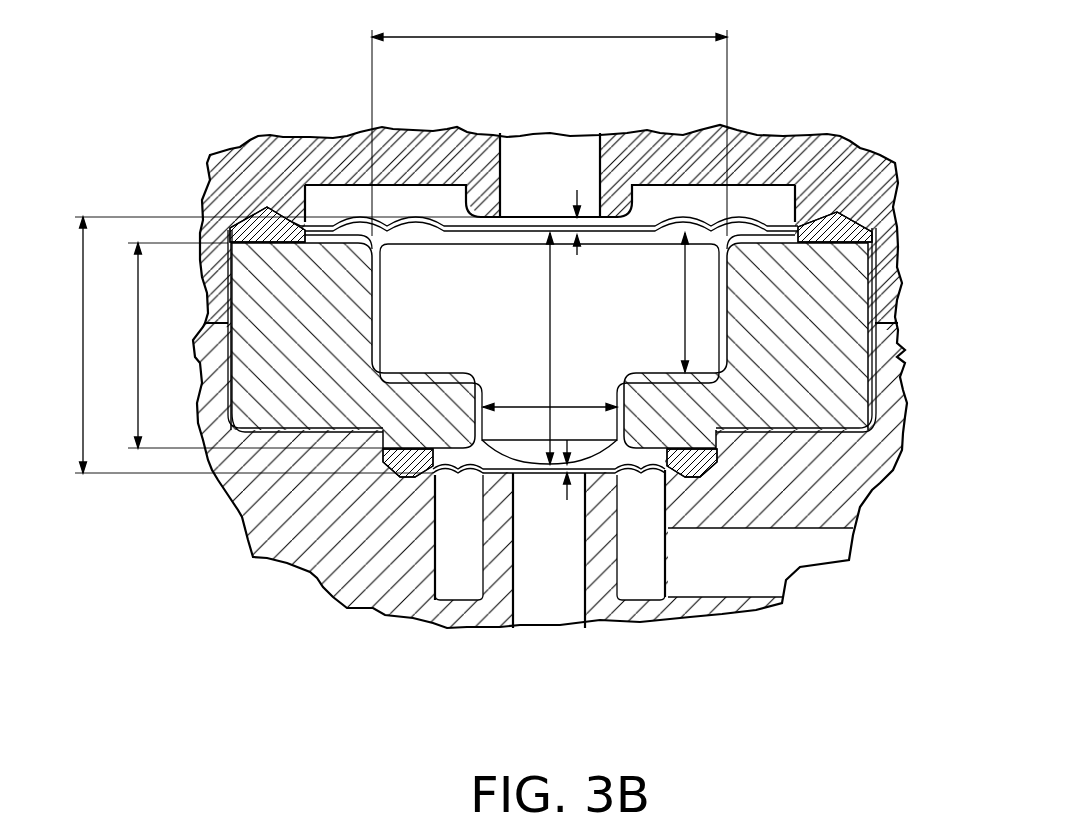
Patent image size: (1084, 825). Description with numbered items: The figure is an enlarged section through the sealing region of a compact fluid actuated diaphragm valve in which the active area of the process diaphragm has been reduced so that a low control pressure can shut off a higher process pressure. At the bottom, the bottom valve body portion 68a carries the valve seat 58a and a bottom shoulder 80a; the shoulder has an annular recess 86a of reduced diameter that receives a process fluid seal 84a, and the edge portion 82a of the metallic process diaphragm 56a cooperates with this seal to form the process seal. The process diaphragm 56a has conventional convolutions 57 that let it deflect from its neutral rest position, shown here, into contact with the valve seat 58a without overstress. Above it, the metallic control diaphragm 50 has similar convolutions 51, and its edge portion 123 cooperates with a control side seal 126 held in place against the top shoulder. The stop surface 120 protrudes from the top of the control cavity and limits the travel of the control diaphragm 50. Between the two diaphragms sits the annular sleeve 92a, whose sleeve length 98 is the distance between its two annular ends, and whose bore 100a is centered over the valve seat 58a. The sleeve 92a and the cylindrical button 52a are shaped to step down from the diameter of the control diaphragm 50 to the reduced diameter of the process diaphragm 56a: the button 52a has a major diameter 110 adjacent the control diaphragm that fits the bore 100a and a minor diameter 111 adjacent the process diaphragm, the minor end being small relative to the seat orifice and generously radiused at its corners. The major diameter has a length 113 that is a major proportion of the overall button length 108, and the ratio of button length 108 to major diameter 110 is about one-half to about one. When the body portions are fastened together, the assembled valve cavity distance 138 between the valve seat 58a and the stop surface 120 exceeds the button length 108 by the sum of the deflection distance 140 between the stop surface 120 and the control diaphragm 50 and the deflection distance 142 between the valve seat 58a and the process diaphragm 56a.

The control diaphragm 50 is at (648, 218).
The convolutions 51 is at (742, 218).
The cylindrical button 52a is at (520, 298).
The process diaphragm 56a is at (487, 467).
The convolutions 57 is at (643, 470).
The valve seat 58a is at (508, 465).
The bottom valve body portion 68a is at (857, 508).
The bottom shoulder 80a is at (680, 473).
The edge portion 82a is at (688, 478).
The process fluid seal 84a is at (700, 478).
The annular recess 86a is at (694, 478).
The annular sleeve 92a is at (890, 350).
The sleeve length 98 is at (141, 323).
The bore 100a is at (365, 372).
The button length 108 is at (552, 350).
The major diameter 110 is at (557, 36).
The minor diameter 111 is at (567, 406).
The length of major diameter 113 is at (683, 345).
The stop surface 120 is at (480, 213).
The edge portion 123 is at (825, 210).
The control side seal 126 is at (867, 218).
The assembled valve cavity distance 138 is at (86, 367).
The deflection distance 140 is at (577, 190).
The deflection distance 142 is at (567, 500).